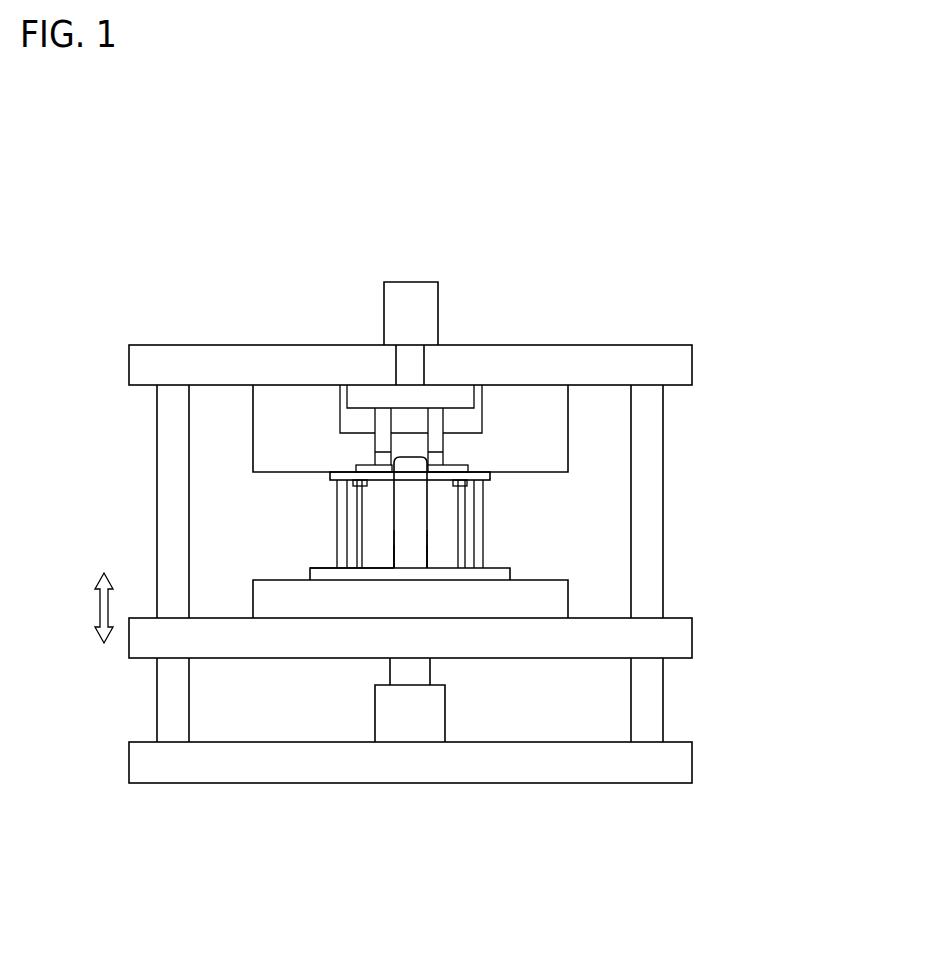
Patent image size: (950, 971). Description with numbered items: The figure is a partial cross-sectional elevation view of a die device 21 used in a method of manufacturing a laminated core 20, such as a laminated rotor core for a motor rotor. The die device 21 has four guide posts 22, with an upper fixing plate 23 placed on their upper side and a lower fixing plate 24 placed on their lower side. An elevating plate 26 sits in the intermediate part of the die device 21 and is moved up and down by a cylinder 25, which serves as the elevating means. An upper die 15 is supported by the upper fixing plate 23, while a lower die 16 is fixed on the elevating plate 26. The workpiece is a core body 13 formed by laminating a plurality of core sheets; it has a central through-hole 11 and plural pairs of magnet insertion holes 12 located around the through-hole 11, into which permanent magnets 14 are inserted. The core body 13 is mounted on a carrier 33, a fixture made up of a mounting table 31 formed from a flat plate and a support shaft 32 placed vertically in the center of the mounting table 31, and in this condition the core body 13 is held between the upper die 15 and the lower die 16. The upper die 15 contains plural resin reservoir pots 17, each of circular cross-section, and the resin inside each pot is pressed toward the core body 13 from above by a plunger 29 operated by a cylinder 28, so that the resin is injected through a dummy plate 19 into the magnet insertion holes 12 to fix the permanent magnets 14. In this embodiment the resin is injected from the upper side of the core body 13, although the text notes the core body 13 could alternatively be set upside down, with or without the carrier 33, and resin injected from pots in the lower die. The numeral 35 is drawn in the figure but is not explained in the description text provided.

The central through-hole 11 is at (427, 542).
The magnet insertion holes 12 is at (373, 542).
The core body 13 is at (488, 533).
The permanent magnets 14 is at (353, 525).
The upper die 15 is at (555, 412).
The lower die 16 is at (547, 598).
The resin reservoir pots 17 is at (437, 462).
The dummy plate 19 is at (330, 477).
The laminated core 20 is at (507, 507).
The die device 21 is at (598, 321).
The guide posts 22 is at (172, 563).
The upper fixing plate 23 is at (212, 355).
The lower fixing plate 24 is at (489, 763).
The cylinder 25 is at (447, 713).
The elevating plate 26 is at (675, 636).
The cylinder 28 is at (410, 296).
The plunger 29 is at (385, 422).
The mounting table 31 is at (383, 575).
The support shaft 32 is at (402, 553).
The carrier 33 is at (400, 858).
The pressing plate (pressing surface 35a) 35 is at (470, 470).